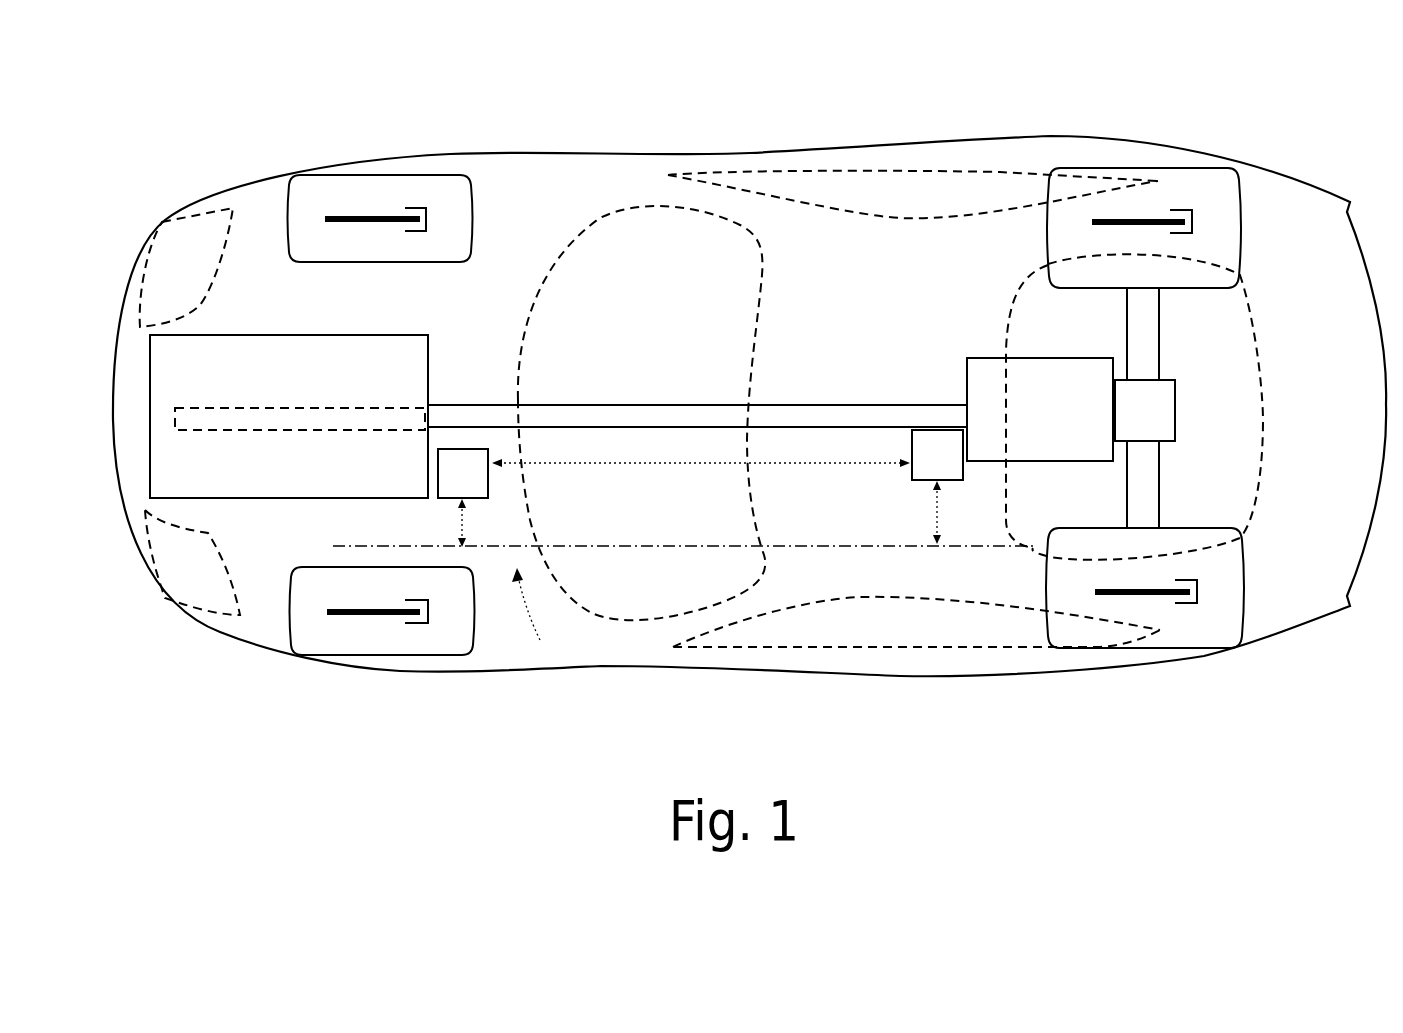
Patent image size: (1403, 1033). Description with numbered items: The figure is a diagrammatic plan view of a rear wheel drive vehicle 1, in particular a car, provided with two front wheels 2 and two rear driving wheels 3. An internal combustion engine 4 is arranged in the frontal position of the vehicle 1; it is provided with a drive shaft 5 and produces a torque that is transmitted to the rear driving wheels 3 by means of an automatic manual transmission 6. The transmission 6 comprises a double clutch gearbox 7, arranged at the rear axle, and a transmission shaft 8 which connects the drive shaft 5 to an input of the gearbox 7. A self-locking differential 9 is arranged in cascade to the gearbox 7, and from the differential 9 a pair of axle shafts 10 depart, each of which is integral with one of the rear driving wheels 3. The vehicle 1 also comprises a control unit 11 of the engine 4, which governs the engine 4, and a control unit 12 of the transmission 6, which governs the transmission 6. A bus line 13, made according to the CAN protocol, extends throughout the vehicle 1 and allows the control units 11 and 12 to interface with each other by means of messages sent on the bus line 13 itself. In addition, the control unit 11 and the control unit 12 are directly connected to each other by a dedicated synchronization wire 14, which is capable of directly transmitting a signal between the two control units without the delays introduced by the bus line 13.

The vehicle 1 is at (1262, 752).
The front wheels 2 is at (310, 192).
The rear driving wheels 3 is at (1224, 188).
The internal combustion engine 4 is at (160, 362).
The drive shaft 5 is at (275, 413).
The automatic manual transmission 6 is at (780, 128).
The double clutch gearbox 7 is at (1000, 387).
The transmission shaft 8 is at (805, 417).
The self-locking differential 9 is at (1145, 410).
The axle shafts 10 is at (1143, 348).
The control unit of engine 11 is at (463, 498).
The control unit of transmission 12 is at (937, 487).
The bus line 13 is at (683, 602).
The synchronization wire 14 is at (622, 463).